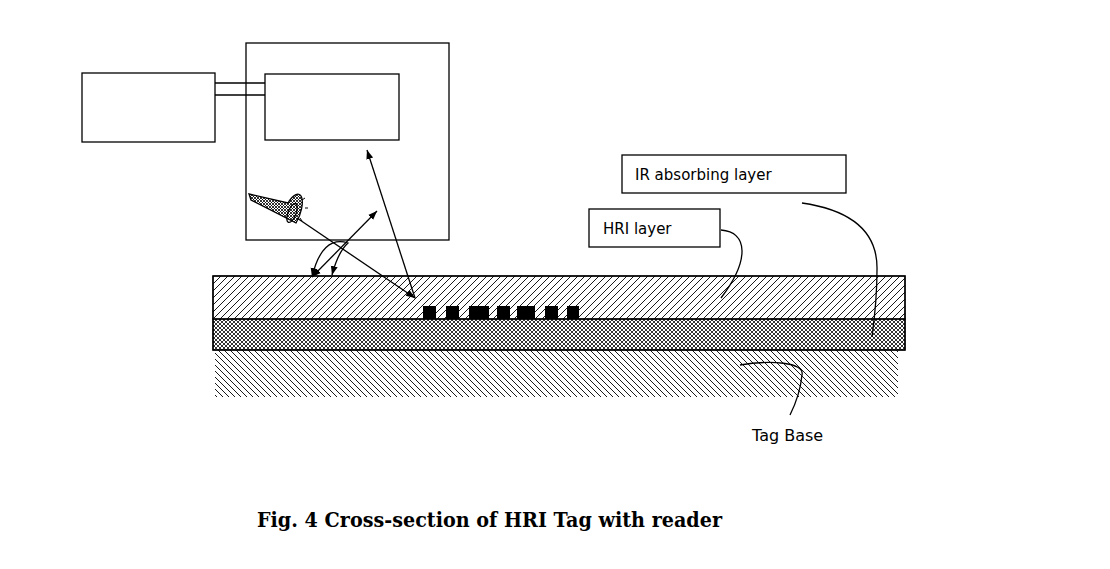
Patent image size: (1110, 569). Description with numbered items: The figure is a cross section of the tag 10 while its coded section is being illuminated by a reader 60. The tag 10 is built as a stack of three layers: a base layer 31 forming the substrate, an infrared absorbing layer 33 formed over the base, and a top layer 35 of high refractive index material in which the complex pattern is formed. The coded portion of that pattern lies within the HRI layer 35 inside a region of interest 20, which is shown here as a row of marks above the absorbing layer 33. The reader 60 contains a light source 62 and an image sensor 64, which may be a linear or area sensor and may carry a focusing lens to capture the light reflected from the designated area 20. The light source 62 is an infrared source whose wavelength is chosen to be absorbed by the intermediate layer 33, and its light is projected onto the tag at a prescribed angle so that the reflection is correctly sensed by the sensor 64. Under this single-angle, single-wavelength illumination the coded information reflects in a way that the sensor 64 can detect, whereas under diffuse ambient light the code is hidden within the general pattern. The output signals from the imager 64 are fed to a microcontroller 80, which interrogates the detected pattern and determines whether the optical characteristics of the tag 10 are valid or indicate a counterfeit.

The tag 10 is at (948, 235).
The region of interest 20 is at (577, 383).
The base layer 31 is at (228, 369).
The infrared absorbing layer 33 is at (225, 331).
The HRI layer 35 is at (215, 290).
The reader 60 is at (449, 183).
The light source 62 is at (250, 197).
The image sensor 64 is at (400, 80).
The microcontroller 80 is at (177, 83).